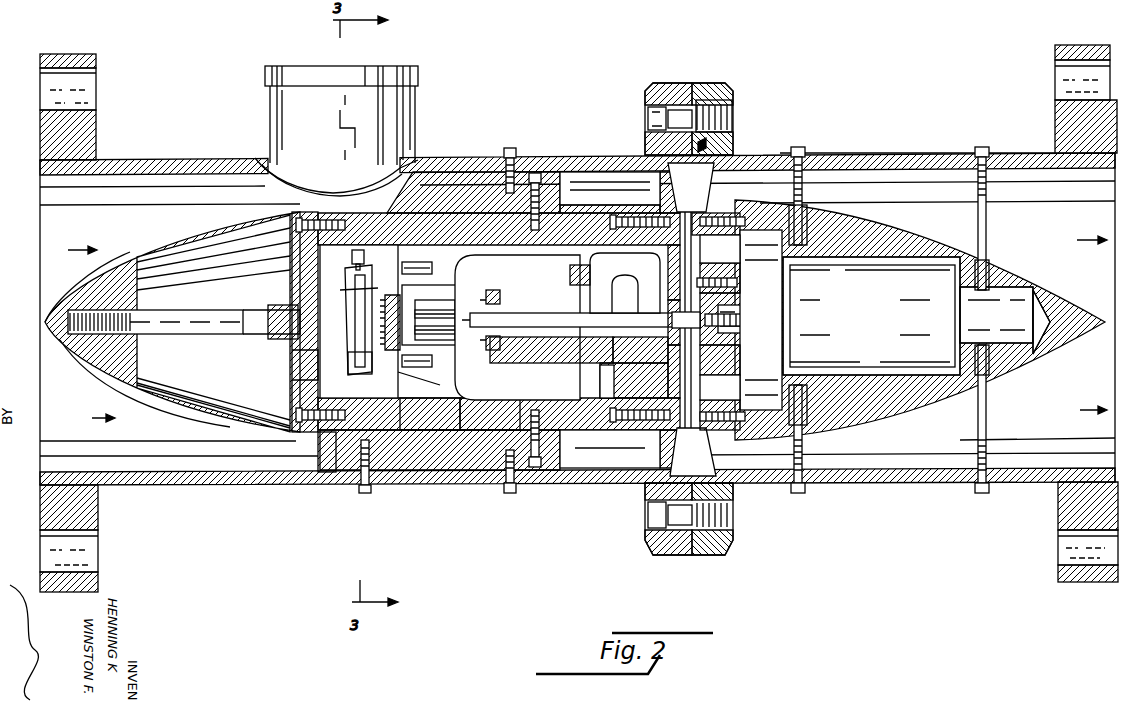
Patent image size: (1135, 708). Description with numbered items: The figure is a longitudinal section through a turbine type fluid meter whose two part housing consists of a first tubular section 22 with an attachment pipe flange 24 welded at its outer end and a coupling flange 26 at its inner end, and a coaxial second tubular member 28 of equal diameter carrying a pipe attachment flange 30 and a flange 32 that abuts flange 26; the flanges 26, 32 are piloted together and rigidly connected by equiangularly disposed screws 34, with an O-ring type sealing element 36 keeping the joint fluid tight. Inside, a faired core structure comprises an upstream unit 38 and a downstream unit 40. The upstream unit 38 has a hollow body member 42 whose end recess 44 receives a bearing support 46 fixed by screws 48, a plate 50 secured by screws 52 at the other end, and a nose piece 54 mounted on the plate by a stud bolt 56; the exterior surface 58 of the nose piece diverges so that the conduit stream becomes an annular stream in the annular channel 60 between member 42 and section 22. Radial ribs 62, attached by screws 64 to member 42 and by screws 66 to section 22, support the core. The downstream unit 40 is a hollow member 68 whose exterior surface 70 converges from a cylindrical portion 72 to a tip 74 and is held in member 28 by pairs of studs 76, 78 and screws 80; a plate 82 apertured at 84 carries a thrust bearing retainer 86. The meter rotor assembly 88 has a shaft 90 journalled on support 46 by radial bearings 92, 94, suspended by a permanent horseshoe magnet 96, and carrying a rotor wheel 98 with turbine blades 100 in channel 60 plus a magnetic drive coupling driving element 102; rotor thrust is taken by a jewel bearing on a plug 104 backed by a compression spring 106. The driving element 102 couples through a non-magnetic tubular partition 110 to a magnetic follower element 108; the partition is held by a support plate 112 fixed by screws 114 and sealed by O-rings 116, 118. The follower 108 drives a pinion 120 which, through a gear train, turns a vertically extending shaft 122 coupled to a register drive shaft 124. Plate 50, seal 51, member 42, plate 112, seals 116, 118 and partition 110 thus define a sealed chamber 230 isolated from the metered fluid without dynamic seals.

The first tubular section 22 is at (175, 160).
The attachment pipe flange 24 is at (96, 62).
The coupling flange 26 is at (680, 83).
The second tubular member 28 is at (910, 153).
The pipe attachment flange 30 is at (1055, 47).
The flange 32 is at (716, 84).
The screws 34 is at (733, 115).
The O-ring type sealing element 36 is at (708, 145).
The upstream unit 38 is at (296, 440).
The downstream unit 40 is at (880, 424).
The hollow body member 42 is at (436, 418).
The end recess 44 is at (490, 414).
The bearing support 46 is at (638, 382).
The screws 48 is at (610, 221).
The plate 50 is at (292, 270).
The seal 51 is at (290, 402).
The screws 52 is at (346, 225).
The nose piece 54 is at (136, 368).
The stud bolt 56 is at (212, 316).
The exterior surface 58 is at (104, 258).
The annular channel 60 is at (594, 172).
The ribs 62 is at (466, 172).
The screws 64 is at (600, 190).
The screws 66 is at (510, 148).
The hollow member 68 is at (878, 382).
The exterior surface 70 is at (888, 224).
The cylindrical portion 72 is at (745, 210).
The tip 74 is at (1088, 322).
The studs 76 is at (807, 215).
The studs 78 is at (986, 250).
The screws 80 is at (812, 138).
The plate 82 is at (740, 366).
The apertures 84 is at (740, 264).
The thrust bearing retainer 86 is at (765, 328).
The meter rotor assembly 88 is at (645, 188).
The shaft 90 is at (570, 328).
The radial bearing 92 is at (498, 350).
The radial bearing 94 is at (660, 332).
The permanent horseshoe magnet 96 is at (615, 283).
The rotor wheel 98 is at (692, 256).
The turbine blades 100 is at (706, 188).
The magnetic drive coupling driving element 102 is at (470, 285).
The plug 104 is at (730, 318).
The compression spring 106 is at (700, 322).
The magnetic follower element 108 is at (438, 284).
The non-magnetic tubular partition 110 is at (438, 340).
The support plate 112 is at (440, 250).
The screws 114 is at (422, 380).
The O-ring 116 is at (428, 365).
The O-ring 118 is at (400, 290).
The pinion 120 is at (352, 324).
The vertically extending shaft 122 is at (360, 376).
The register drive shaft 124 is at (352, 255).
The sealed chamber 230 is at (292, 363).